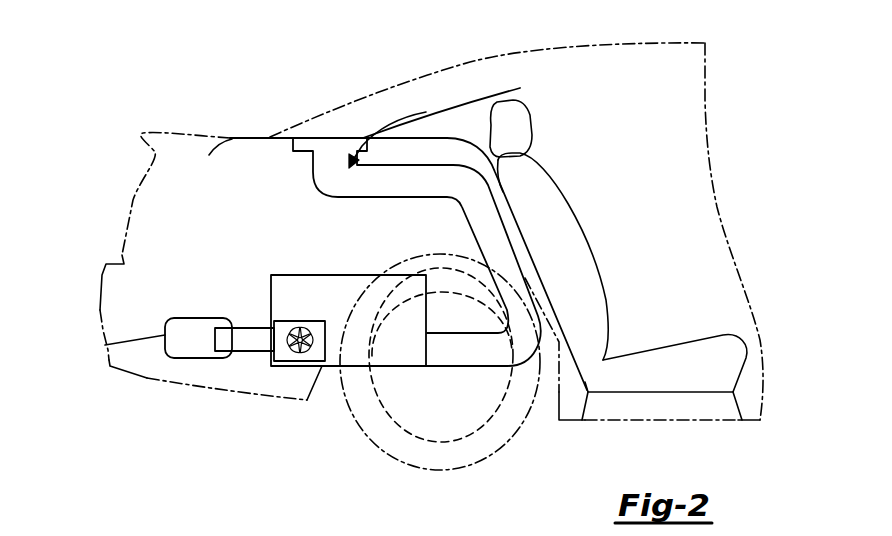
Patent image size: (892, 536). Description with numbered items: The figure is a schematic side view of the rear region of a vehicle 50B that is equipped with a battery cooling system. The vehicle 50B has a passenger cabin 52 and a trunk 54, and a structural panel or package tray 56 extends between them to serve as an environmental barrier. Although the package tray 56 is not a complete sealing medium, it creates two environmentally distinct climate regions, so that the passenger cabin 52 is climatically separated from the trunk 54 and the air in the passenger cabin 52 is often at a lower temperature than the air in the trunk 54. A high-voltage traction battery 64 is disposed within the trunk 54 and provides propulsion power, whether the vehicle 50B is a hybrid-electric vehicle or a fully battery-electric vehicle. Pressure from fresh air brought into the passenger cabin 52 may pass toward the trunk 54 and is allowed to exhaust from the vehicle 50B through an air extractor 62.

The vehicle 50B is at (338, 84).
The passenger cabin 52 is at (636, 143).
The trunk 54 is at (166, 229).
The package tray 56 is at (283, 137).
The air extractor 62 is at (105, 345).
The high-voltage traction battery 64 is at (290, 274).